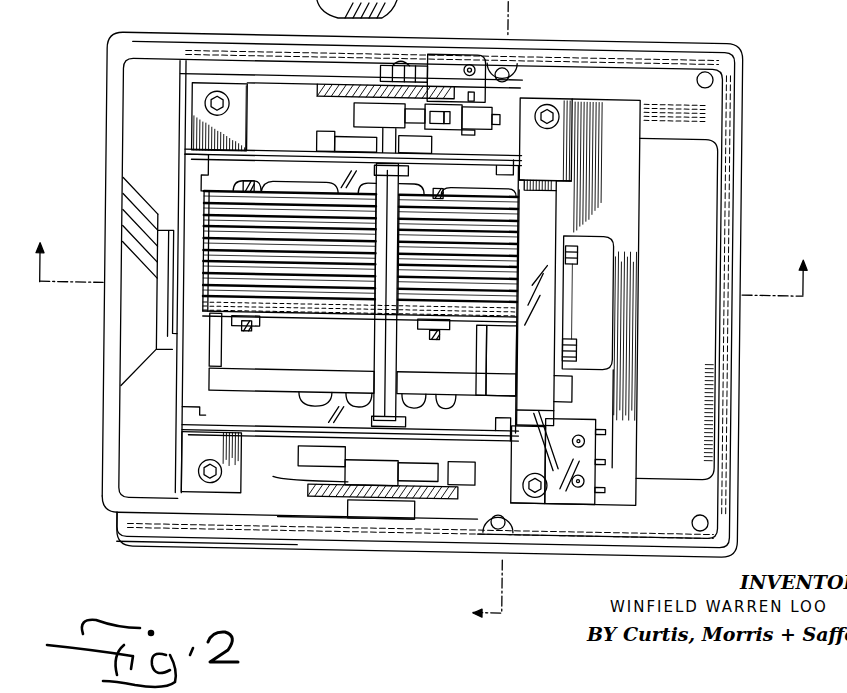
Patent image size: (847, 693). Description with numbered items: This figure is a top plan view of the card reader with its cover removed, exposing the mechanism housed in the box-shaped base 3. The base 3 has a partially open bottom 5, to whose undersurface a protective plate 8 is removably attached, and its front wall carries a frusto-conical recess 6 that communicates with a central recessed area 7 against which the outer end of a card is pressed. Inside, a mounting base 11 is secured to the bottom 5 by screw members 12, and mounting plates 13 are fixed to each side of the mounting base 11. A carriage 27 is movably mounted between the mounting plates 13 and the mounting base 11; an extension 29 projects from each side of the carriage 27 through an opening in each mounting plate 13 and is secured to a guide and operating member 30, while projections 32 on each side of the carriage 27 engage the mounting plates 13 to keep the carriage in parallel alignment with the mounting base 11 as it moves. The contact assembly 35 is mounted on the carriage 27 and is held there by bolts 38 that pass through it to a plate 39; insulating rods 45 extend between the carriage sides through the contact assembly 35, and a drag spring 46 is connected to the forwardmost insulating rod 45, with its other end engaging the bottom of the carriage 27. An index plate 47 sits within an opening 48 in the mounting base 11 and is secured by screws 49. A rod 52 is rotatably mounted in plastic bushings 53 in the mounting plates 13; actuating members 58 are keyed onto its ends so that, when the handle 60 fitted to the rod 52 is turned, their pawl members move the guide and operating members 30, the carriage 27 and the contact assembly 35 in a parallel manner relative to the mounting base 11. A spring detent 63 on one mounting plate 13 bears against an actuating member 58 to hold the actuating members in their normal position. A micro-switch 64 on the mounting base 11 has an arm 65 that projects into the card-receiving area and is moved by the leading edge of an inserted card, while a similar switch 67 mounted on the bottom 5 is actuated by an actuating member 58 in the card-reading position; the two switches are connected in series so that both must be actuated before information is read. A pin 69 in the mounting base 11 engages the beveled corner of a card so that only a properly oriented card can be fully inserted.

The base 3 is at (728, 139).
The bottom 5 is at (705, 492).
The frusto-conical recess 6 is at (131, 349).
The recessed area 7 is at (178, 216).
The plate 8 is at (418, 258).
The mounting base 11 is at (627, 167).
The screw members 12 is at (203, 105).
The mounting plates 13 is at (190, 153).
The carriage 27 is at (537, 358).
The extension 29 is at (305, 147).
The guide and operating member 30 is at (430, 143).
The projections 32 is at (497, 415).
The contact assembly 35 is at (233, 282).
The bolts 38 is at (252, 333).
The plate 39 is at (313, 308).
The insulating rods 45 is at (222, 348).
The drag spring 46 is at (302, 376).
The index plate 47 is at (555, 253).
The opening 48 is at (607, 257).
The screws 49 is at (572, 260).
The rod 52 is at (380, 357).
The plastic bushings 53 is at (406, 170).
The actuating members 58 is at (347, 560).
The handle 60 is at (111, 83).
The spring detent 63 is at (433, 475).
The switch 64 is at (600, 467).
The arm 65 is at (532, 408).
The switch 67 is at (472, 113).
The pin 69 is at (540, 185).